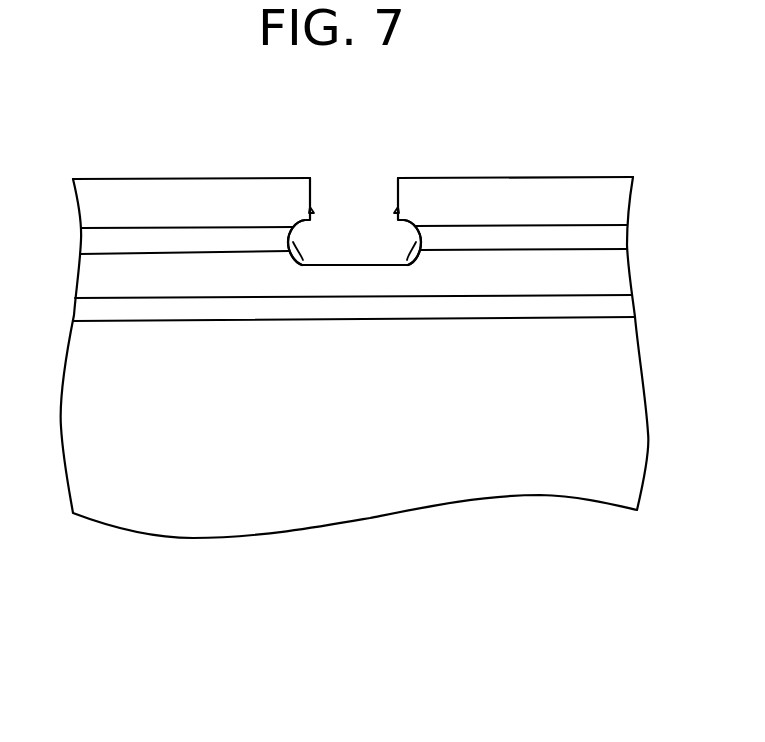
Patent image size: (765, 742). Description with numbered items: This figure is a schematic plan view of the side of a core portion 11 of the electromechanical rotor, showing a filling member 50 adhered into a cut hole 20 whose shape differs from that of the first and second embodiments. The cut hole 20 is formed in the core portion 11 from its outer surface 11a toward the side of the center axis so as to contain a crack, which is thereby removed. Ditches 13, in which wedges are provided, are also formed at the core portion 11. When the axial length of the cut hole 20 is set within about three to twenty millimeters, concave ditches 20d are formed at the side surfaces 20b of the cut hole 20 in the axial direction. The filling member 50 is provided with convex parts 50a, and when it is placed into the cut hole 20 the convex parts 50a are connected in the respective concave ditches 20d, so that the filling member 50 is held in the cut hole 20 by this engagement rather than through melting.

The core portion 11 is at (565, 183).
The outer surface 11a is at (437, 176).
The ditches 13 is at (602, 281).
The cut hole 20 is at (307, 195).
The side surfaces of the cut hole 20b is at (396, 213).
The concave ditches 20d is at (420, 246).
The filling member 50 is at (362, 200).
The convex parts 50a is at (405, 273).